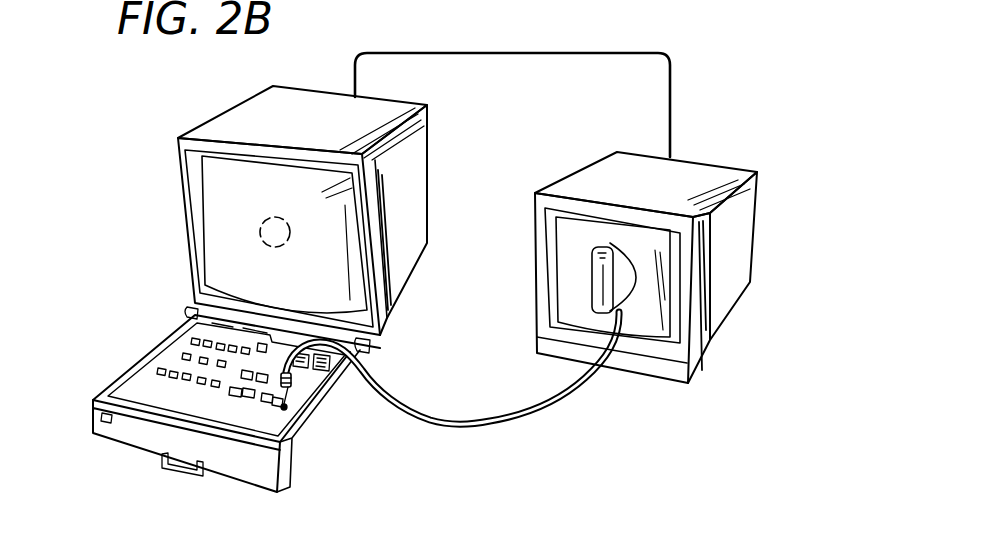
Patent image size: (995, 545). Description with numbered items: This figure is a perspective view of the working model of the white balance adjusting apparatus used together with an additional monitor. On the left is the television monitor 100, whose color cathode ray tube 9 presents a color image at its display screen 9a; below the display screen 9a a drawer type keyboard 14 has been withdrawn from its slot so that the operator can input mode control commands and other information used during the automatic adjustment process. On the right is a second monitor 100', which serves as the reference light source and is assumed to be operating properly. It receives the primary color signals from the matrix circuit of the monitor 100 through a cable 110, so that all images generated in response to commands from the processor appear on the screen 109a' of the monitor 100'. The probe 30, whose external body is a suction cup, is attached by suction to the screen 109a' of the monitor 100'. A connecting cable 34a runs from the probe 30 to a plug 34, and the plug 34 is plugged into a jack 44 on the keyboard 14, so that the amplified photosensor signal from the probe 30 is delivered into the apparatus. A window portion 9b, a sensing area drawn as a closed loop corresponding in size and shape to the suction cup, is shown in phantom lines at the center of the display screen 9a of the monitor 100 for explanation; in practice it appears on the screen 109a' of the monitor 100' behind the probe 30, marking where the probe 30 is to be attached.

The television monitor 100 is at (261, 207).
The second monitor 100' is at (629, 243).
The cable 110 is at (497, 55).
The color cathode ray tube 9 is at (185, 255).
The display screen 9a is at (222, 225).
The window portion 9b is at (262, 225).
The keyboard 14 is at (180, 352).
The plug 34 is at (292, 383).
The connecting cable 34a is at (533, 425).
The jack 44 is at (287, 410).
The display screen of monitor 100' 109a' is at (566, 267).
The probe 30 is at (637, 253).